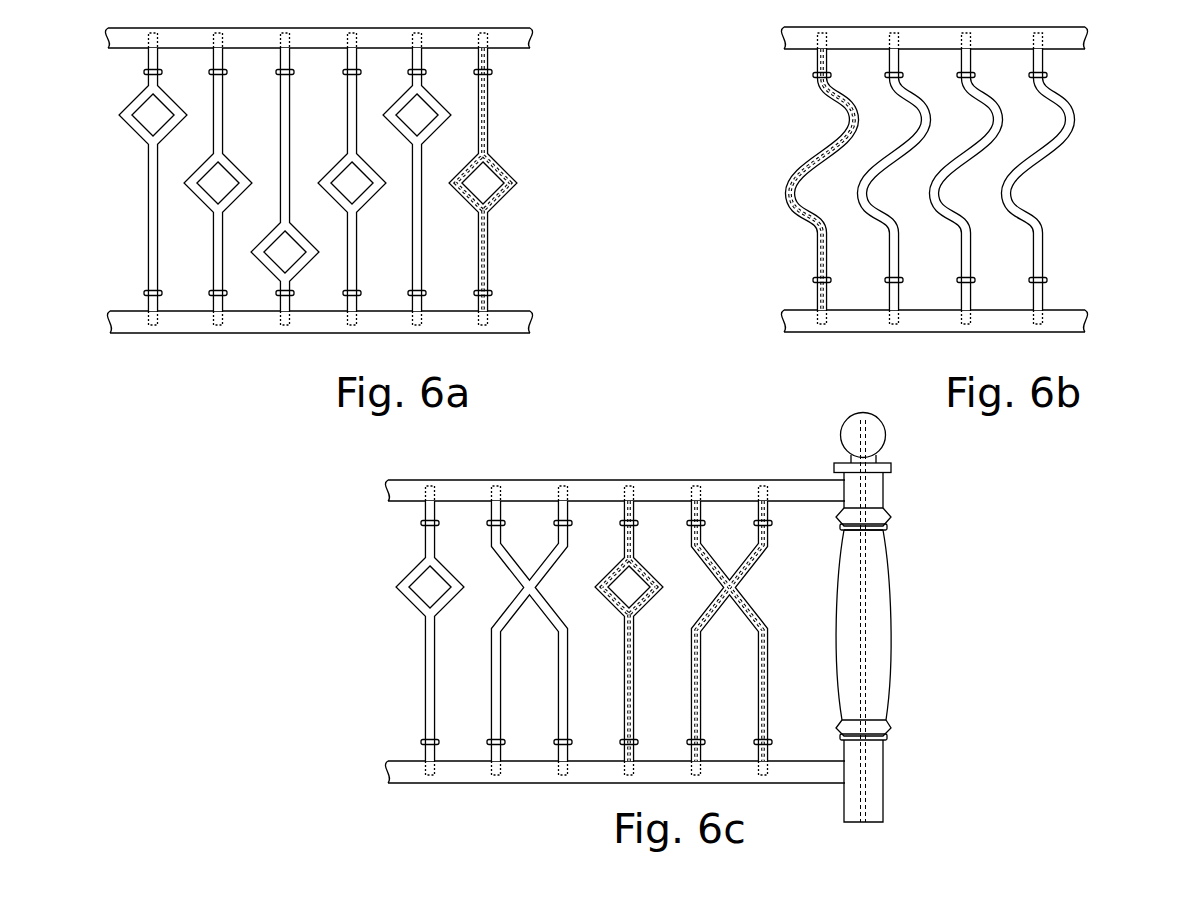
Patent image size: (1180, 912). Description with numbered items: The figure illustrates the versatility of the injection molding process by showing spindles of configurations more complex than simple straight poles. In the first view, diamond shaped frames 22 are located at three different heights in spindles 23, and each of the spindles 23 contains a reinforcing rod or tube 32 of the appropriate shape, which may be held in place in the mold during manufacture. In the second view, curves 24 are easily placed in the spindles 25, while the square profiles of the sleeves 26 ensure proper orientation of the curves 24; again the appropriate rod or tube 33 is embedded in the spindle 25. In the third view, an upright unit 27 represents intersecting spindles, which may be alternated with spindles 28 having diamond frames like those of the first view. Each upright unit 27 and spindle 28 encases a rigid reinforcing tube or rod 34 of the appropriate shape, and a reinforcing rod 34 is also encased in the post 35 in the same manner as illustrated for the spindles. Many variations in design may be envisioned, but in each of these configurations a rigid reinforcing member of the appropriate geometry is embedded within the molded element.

In FIG. 6a, the diamond shaped frame 22 is at (193, 194).
In FIG. 6a, the spindle 23 is at (147, 237).
In FIG. 6a, the reinforcing rod or tube 32 is at (488, 115).
In FIG. 6b, the curve 24 is at (803, 167).
In FIG. 6b, the spindle 25 is at (816, 251).
In FIG. 6b, the sleeve 26 is at (816, 52).
In FIG. 6b, the rod or tube 33 is at (792, 196).
In FIG. 6c, the upright unit 27 is at (491, 704).
In FIG. 6c, the spindle 28 is at (424, 646).
In FIG. 6c, the reinforcing tube or rod 34 is at (742, 599).
In FIG. 6c, the post 35 is at (891, 651).